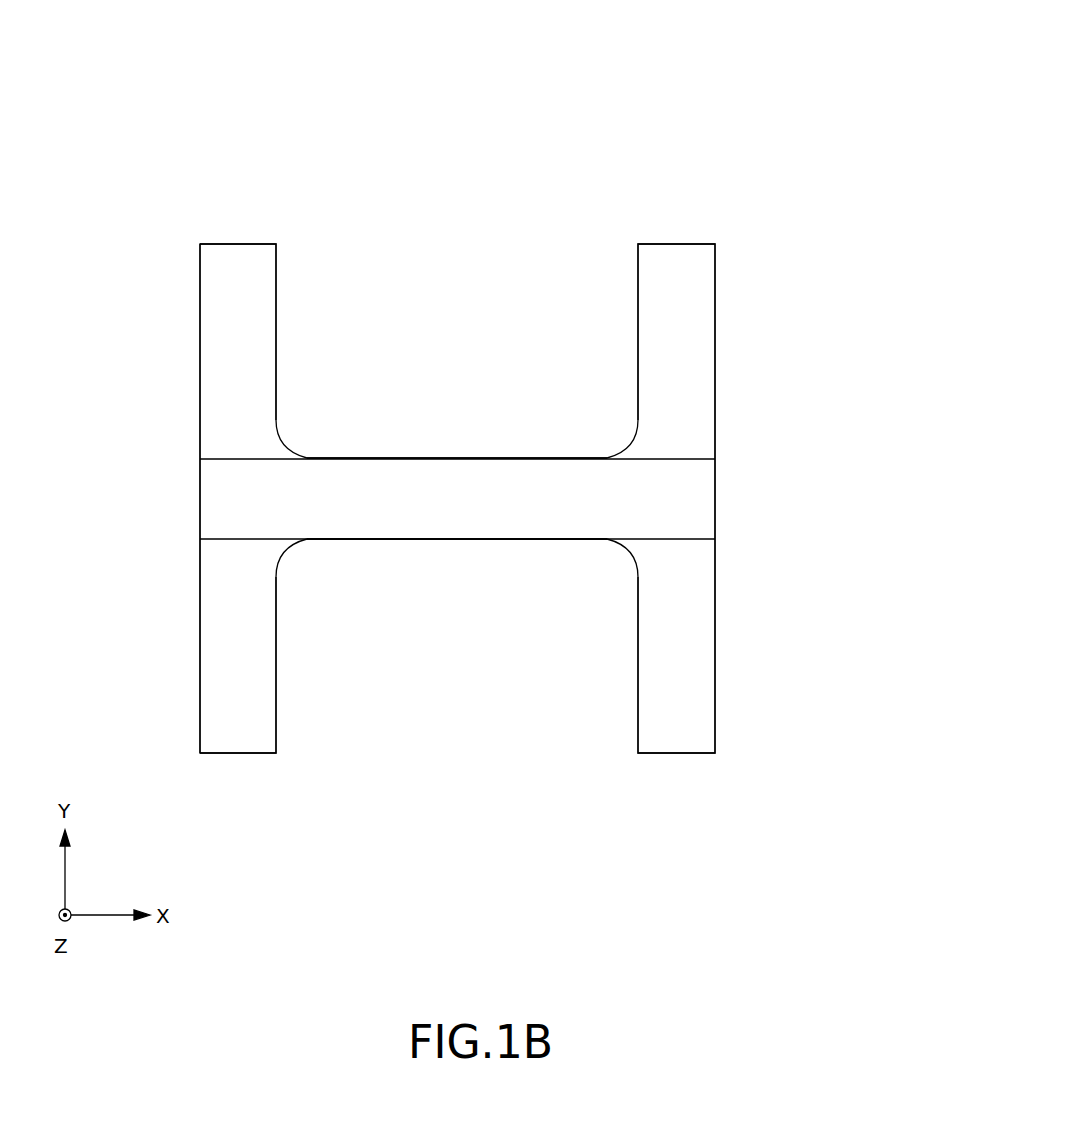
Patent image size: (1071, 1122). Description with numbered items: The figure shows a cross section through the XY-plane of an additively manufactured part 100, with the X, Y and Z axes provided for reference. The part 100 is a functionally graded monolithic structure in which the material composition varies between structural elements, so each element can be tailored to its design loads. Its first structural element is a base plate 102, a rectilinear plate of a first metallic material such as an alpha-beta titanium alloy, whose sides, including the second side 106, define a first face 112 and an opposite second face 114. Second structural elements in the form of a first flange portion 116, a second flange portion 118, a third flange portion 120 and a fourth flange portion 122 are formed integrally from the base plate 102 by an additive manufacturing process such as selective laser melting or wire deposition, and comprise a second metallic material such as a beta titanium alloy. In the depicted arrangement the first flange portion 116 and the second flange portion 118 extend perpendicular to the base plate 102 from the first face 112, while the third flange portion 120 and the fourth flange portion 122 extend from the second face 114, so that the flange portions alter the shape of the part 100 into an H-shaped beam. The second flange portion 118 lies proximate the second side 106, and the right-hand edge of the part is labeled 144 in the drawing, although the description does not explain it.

The additively manufactured part 100 is at (670, 94).
The base plate 102 is at (489, 509).
The second side 106 is at (200, 495).
The first face 112 is at (455, 458).
The second face 114 is at (473, 539).
The first flange portion 116 is at (693, 307).
The second flange portion 118 is at (257, 315).
The third flange portion 120 is at (715, 640).
The fourth flange portion 122 is at (276, 663).
The right side surface 144 is at (715, 507).